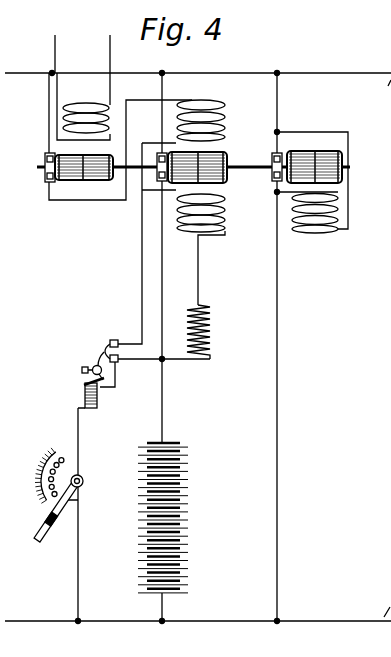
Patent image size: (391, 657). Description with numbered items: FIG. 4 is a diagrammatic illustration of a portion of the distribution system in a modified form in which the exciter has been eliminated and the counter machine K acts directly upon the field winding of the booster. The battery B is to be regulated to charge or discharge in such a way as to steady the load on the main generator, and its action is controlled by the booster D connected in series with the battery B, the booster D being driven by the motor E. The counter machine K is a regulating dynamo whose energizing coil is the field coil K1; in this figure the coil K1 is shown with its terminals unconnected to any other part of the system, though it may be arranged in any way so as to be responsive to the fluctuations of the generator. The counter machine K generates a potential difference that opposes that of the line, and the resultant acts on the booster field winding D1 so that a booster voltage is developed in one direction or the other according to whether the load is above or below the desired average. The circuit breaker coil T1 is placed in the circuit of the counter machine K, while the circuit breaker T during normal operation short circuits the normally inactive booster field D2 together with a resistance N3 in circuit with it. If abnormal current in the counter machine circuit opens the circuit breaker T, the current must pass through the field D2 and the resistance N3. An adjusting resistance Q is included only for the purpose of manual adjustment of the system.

The counter machine K is at (80, 179).
The field coil of the counter machine K1 is at (91, 94).
The booster D is at (227, 155).
The booster field winding D1 is at (226, 124).
The normally inactive booster field D2 is at (226, 216).
The motor E is at (332, 156).
The resistance N3 is at (210, 330).
The circuit breaker T is at (108, 345).
The circuit breaker coil T1 is at (85, 396).
The adjusting resistance Q is at (42, 483).
The battery B is at (188, 511).